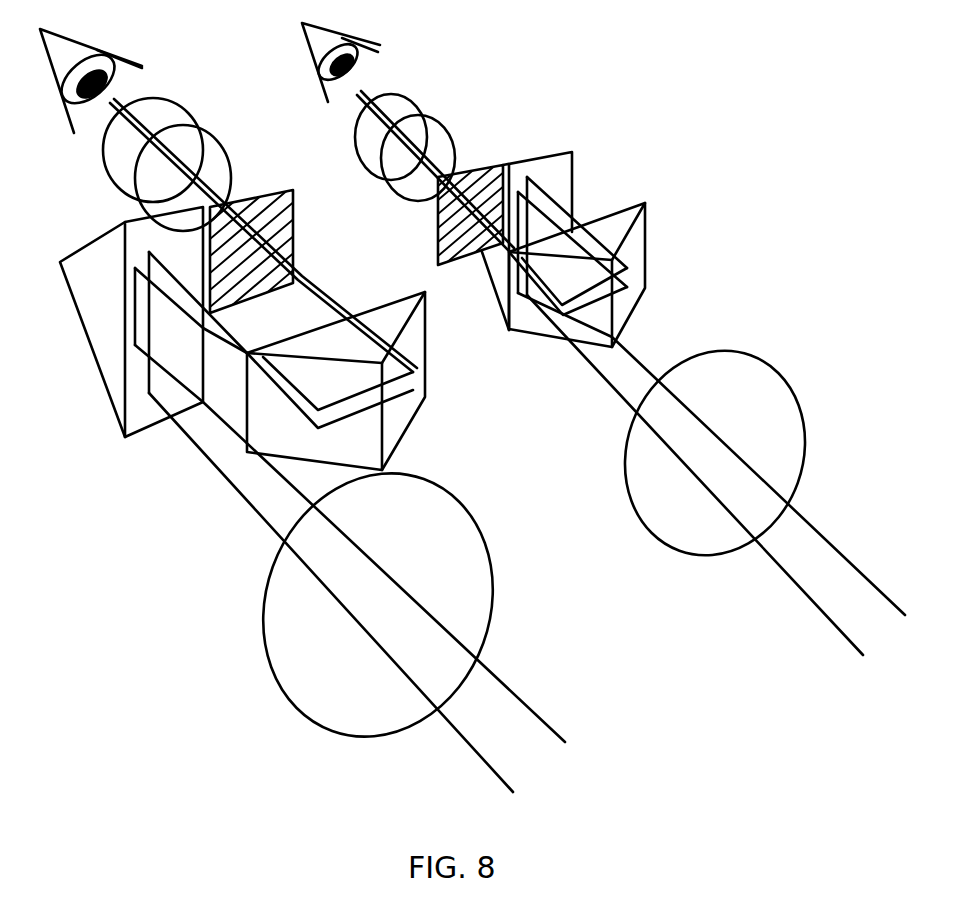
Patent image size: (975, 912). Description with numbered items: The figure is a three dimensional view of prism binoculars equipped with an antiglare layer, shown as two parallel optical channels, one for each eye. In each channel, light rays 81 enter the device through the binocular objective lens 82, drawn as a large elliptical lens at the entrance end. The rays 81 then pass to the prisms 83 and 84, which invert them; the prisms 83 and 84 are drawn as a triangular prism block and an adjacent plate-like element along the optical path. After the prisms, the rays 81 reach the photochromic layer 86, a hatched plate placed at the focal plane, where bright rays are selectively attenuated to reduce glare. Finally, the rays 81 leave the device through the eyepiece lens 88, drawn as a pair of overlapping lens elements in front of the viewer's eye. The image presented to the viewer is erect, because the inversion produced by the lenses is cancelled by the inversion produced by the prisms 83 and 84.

The light rays 81 is at (703, 553).
The binocular objective lens 82 is at (642, 525).
The prism 83 is at (545, 337).
The prism 84 is at (88, 337).
The photochromic layer 86 is at (445, 228).
The eyepiece lens 88 is at (357, 122).